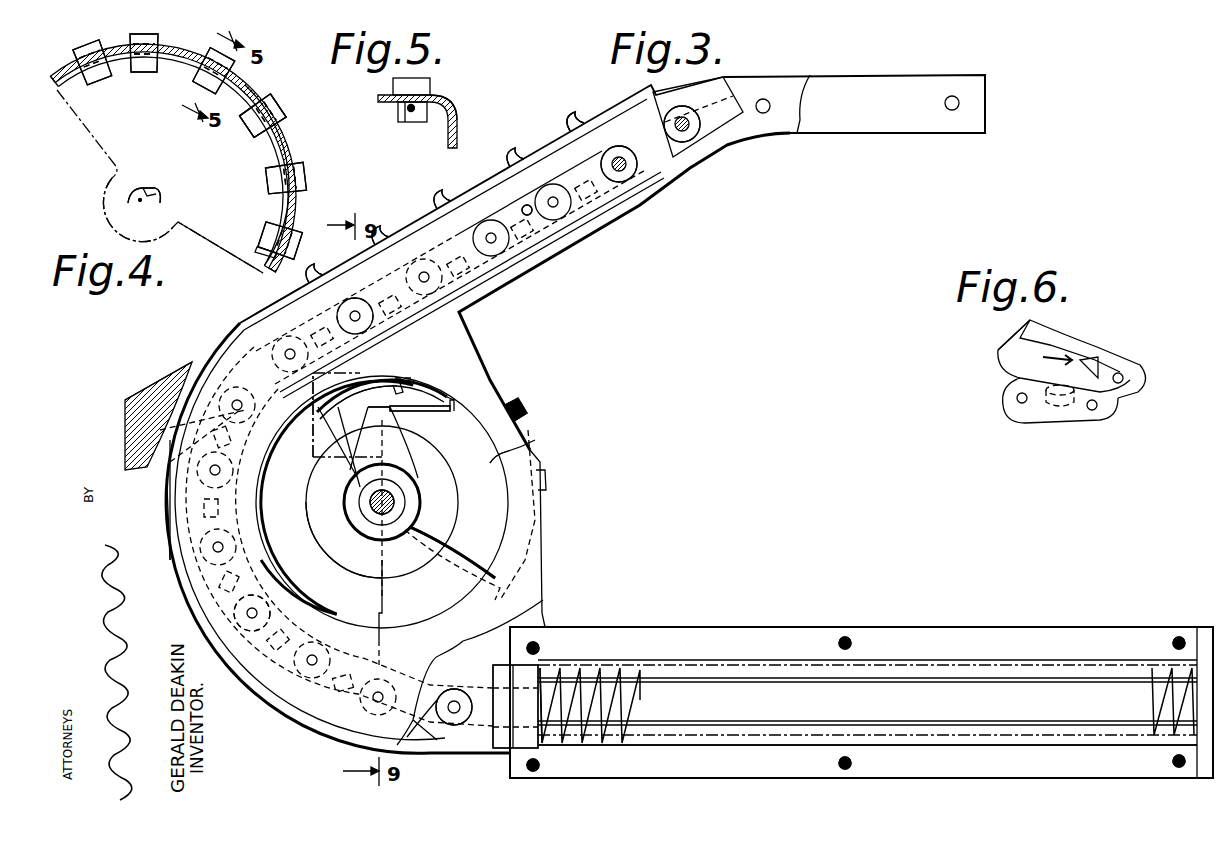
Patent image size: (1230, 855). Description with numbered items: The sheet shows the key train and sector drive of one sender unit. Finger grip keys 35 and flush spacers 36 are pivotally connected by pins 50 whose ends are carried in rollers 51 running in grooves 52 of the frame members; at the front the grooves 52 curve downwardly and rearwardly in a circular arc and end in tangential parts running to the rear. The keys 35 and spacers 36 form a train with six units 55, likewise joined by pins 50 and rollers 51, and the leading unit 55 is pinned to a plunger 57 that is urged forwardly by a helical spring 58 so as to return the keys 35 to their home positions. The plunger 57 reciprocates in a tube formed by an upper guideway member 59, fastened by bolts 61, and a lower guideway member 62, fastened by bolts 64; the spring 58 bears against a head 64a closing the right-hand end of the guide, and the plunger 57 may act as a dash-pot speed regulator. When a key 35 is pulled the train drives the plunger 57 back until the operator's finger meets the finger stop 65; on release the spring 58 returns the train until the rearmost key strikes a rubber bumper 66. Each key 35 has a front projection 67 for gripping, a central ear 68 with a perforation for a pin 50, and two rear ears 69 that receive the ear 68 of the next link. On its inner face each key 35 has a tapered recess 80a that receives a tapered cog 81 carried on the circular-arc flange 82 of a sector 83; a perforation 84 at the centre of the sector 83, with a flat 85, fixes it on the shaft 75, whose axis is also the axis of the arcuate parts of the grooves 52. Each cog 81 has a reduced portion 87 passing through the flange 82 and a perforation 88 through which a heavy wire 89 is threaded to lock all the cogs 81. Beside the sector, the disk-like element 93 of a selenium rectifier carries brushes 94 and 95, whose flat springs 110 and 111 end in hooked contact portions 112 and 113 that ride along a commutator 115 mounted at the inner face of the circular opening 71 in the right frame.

In FIG. 3, the finger grip key 35 is at (617, 125).
In FIG. 6, the finger grip key 35 is at (1101, 342).
In FIG. 3, the flush spacer 36 is at (256, 313).
In FIG. 3, the pin 50 is at (680, 145).
In FIG. 3, the roller 51 is at (617, 182).
In FIG. 3, the groove 52 is at (148, 430).
In FIG. 3, the unit 55 is at (170, 462).
In FIG. 3, the plunger 57 is at (506, 705).
In FIG. 3, the helical spring 58 is at (592, 668).
In FIG. 3, the upper guideway member 59 is at (735, 640).
In FIG. 3, the bolt 61 is at (538, 645).
In FIG. 3, the lower guideway member 62 is at (937, 762).
In FIG. 3, the bolt 64 is at (538, 770).
In FIG. 3, the head 64a is at (1205, 765).
In FIG. 3, the finger stop 65 is at (160, 380).
In FIG. 3, the bumper 66 is at (700, 82).
In FIG. 3, the projection 67 is at (576, 125).
In FIG. 6, the projection 67 is at (1029, 322).
In FIG. 6, the central ear 68 is at (1007, 410).
In FIG. 6, the ear 69 is at (1140, 397).
In FIG. 3, the circular opening 71 is at (492, 462).
In FIG. 3, the shaft 75 is at (400, 503).
In FIG. 3, the tapered recess 80a is at (342, 298).
In FIG. 6, the tapered recess 80a is at (1047, 407).
In FIG. 3, the tapered cog 81 is at (524, 412).
In FIG. 4, the tapered cog 81 is at (276, 108).
In FIG. 5, the tapered cog 81 is at (393, 83).
In FIG. 4, the circular-arc flange 82 is at (272, 267).
In FIG. 5, the circular-arc flange 82 is at (437, 95).
In FIG. 3, the sector 83 is at (467, 563).
In FIG. 4, the sector 83 is at (225, 253).
In FIG. 5, the sector 83 is at (458, 127).
In FIG. 4, the perforation 84 is at (128, 201).
In FIG. 4, the flat 85 is at (158, 194).
In FIG. 4, the reduced portion 87 is at (260, 125).
In FIG. 5, the reduced portion 87 is at (402, 121).
In FIG. 5, the perforation 88 is at (414, 110).
In FIG. 4, the heavy wire 89 is at (270, 149).
In FIG. 3, the disk-like element 93 is at (357, 577).
In FIG. 3, the rectifier brush 94 is at (338, 420).
In FIG. 3, the rectifier brush 95 is at (386, 446).
In FIG. 3, the flat spring 110 is at (410, 391).
In FIG. 3, the flat spring 111 is at (420, 418).
In FIG. 3, the contact portion 112 is at (405, 378).
In FIG. 3, the contact portion 113 is at (458, 398).
In FIG. 3, the commutator 115 is at (274, 543).